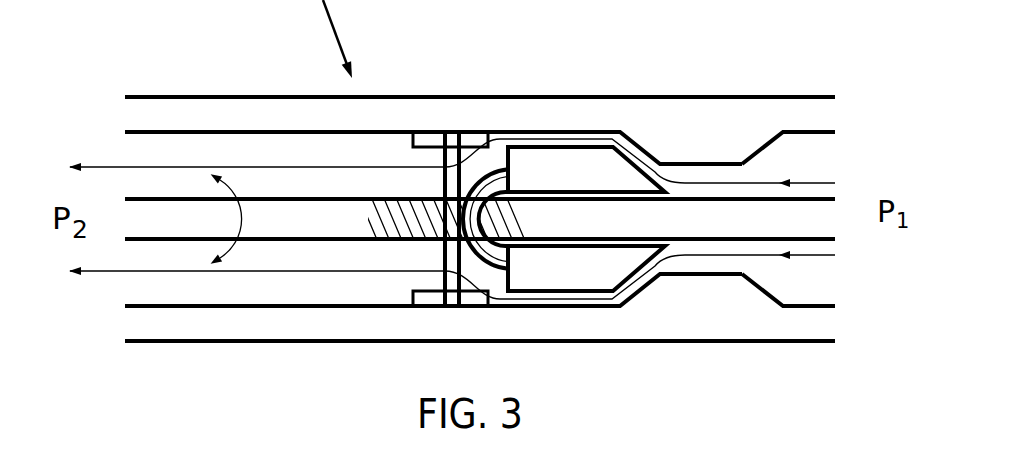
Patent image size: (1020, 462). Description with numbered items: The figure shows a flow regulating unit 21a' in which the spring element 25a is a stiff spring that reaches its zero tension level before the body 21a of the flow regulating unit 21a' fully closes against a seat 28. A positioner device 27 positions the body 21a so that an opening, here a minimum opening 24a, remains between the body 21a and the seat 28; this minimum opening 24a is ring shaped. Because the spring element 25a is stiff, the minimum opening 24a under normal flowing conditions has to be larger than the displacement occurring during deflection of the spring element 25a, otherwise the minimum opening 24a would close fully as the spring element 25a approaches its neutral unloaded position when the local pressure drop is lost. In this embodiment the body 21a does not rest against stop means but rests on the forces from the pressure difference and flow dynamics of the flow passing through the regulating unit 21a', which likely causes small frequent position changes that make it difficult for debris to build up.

The body 21a is at (512, 162).
The flow regulating unit 21a' is at (279, 39).
The minimum opening 24a is at (630, 144).
The spring element 25a is at (490, 165).
The positioner device 27 is at (453, 138).
The seat 28 is at (651, 152).